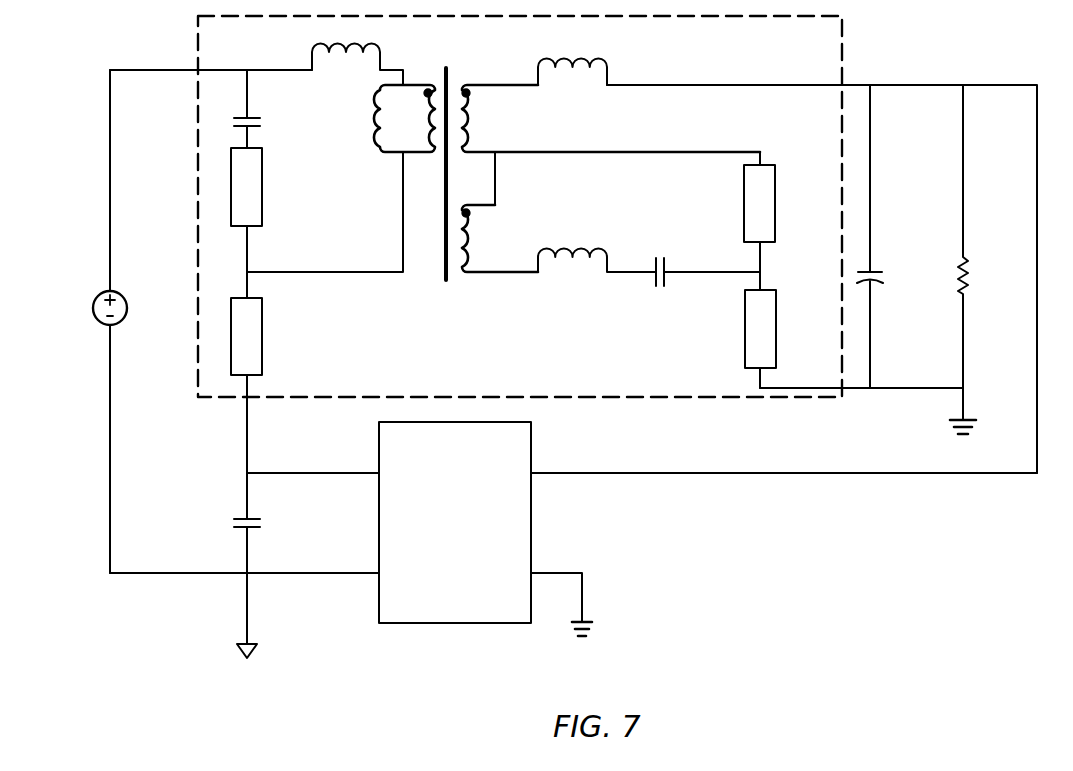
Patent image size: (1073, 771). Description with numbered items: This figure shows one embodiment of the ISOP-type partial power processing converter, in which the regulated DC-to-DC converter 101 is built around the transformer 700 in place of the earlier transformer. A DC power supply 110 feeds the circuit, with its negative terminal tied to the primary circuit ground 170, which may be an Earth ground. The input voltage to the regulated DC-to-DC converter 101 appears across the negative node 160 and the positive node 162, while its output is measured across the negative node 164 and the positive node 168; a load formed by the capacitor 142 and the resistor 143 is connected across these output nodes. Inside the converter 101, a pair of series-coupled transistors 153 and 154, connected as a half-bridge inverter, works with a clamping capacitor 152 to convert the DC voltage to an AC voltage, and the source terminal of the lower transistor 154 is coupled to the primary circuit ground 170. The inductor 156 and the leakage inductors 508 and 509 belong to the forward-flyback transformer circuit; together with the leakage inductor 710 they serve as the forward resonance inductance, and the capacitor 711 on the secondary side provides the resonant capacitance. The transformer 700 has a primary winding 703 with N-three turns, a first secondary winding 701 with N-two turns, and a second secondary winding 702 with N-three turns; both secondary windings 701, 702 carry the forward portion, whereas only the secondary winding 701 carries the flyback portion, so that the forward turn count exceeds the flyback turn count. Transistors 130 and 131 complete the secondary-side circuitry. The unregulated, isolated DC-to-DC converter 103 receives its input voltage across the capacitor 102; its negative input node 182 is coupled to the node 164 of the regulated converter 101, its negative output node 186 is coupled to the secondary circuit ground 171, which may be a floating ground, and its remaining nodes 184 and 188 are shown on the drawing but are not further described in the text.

The regulated DC-to-DC converter 101 is at (668, 398).
The capacitor 102 is at (253, 530).
The isolated DC-to-DC converter 103 is at (517, 422).
The DC power supply 110 is at (103, 293).
The transistor 130 is at (775, 230).
The transistor 131 is at (776, 327).
The capacitor 142 is at (875, 272).
The resistor 143 is at (968, 258).
The clamping capacitor 152 is at (252, 118).
The transistor 153 is at (263, 200).
The transistor 154 is at (263, 360).
The inductor 156 is at (378, 108).
The negative node 160 is at (249, 383).
The positive node 162 is at (219, 70).
The negative node 164 is at (820, 385).
The positive node 168 is at (802, 85).
The primary circuit ground 170 is at (258, 648).
The secondary circuit ground 171 is at (976, 422).
The negative input node 182 is at (333, 572).
The controller terminal 184 is at (333, 472).
The negative output node 186 is at (538, 572).
The controller terminal 188 is at (538, 472).
The forward-flyback transformer leakage inductor 508 is at (373, 45).
The forward-flyback transformer leakage inductor 509 is at (584, 58).
The transformer 700 is at (503, 181).
The first secondary winding 701 is at (445, 261).
The second secondary winding 702 is at (466, 85).
The primary winding 703 is at (426, 85).
The forward-flyback transformer leakage inductor 710 is at (583, 247).
The capacitor 711 is at (665, 262).